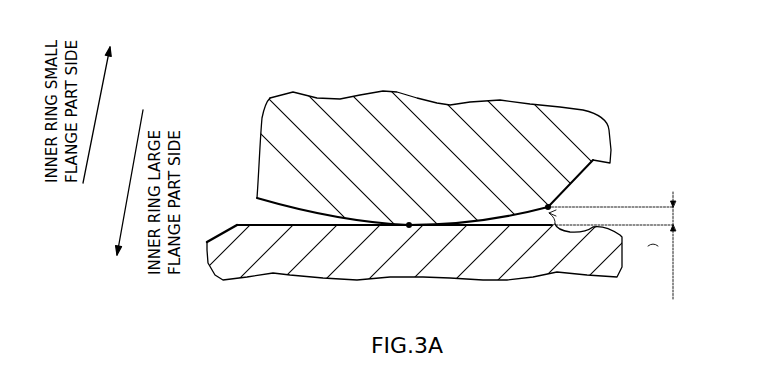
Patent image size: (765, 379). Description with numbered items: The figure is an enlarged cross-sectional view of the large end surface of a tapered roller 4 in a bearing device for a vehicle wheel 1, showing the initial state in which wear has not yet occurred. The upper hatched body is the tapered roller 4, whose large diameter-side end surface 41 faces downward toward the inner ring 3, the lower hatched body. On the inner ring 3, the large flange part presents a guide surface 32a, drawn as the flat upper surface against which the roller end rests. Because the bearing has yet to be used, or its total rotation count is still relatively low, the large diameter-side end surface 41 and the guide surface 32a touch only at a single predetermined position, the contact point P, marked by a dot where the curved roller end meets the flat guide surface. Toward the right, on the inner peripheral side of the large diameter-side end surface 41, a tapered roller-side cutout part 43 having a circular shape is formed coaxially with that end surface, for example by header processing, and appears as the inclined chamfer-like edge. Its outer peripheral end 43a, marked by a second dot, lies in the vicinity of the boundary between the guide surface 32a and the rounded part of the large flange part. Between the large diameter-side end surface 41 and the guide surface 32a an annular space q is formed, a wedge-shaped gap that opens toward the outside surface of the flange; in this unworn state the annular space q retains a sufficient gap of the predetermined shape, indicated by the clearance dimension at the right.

The bearing device for a vehicle wheel 1 is at (638, 60).
The inner ring 3 is at (347, 220).
The guide surface 32a is at (512, 225).
The tapered roller 4 is at (273, 210).
The large diameter-side end surface 41 is at (317, 212).
The tapered roller-side cutout part 43 is at (566, 193).
The outer peripheral end 43a is at (548, 205).
The contact point P is at (409, 224).
The annular space q is at (600, 227).